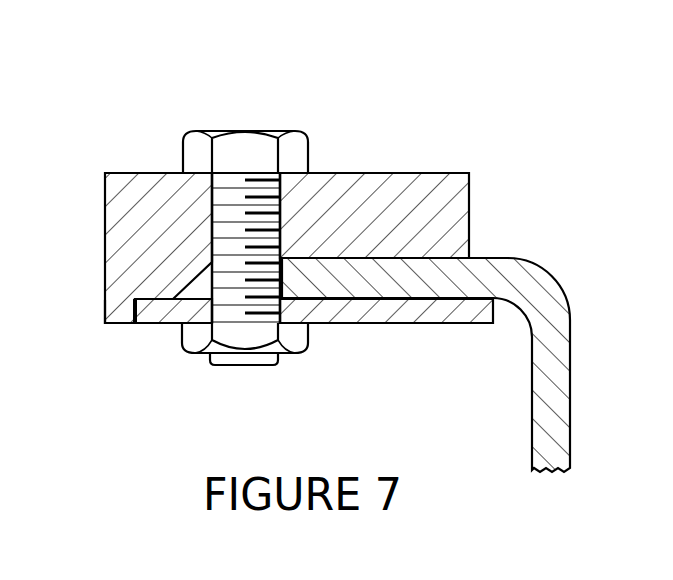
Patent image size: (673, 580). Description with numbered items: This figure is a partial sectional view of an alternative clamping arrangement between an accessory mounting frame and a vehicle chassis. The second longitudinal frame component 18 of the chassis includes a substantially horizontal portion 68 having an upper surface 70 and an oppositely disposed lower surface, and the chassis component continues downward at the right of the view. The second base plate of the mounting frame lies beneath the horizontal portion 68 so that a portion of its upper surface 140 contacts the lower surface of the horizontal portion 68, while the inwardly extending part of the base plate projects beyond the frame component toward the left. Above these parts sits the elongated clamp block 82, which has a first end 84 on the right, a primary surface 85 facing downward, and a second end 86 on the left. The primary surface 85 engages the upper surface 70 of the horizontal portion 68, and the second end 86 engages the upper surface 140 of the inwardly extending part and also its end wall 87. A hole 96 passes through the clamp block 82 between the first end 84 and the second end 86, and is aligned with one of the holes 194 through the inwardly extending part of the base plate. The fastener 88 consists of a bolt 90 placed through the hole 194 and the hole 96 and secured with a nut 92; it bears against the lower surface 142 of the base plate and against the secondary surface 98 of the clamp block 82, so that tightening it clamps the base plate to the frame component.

The second longitudinal frame component 18 is at (576, 370).
The horizontal portion 68 is at (387, 291).
The upper surface 70 is at (423, 254).
The clamp block 82 is at (403, 227).
The first end 84 is at (478, 232).
The primary surface 85 is at (318, 254).
The second end 86 is at (110, 328).
The end wall 87 is at (130, 313).
The fastener 88 is at (188, 186).
The bolt 90 is at (198, 153).
The nut 92 is at (198, 338).
The hole 96 is at (205, 233).
The secondary surface 98 is at (328, 170).
The upper surface 140 is at (146, 295).
The lower surface 142 is at (388, 328).
The hole 194 is at (287, 312).